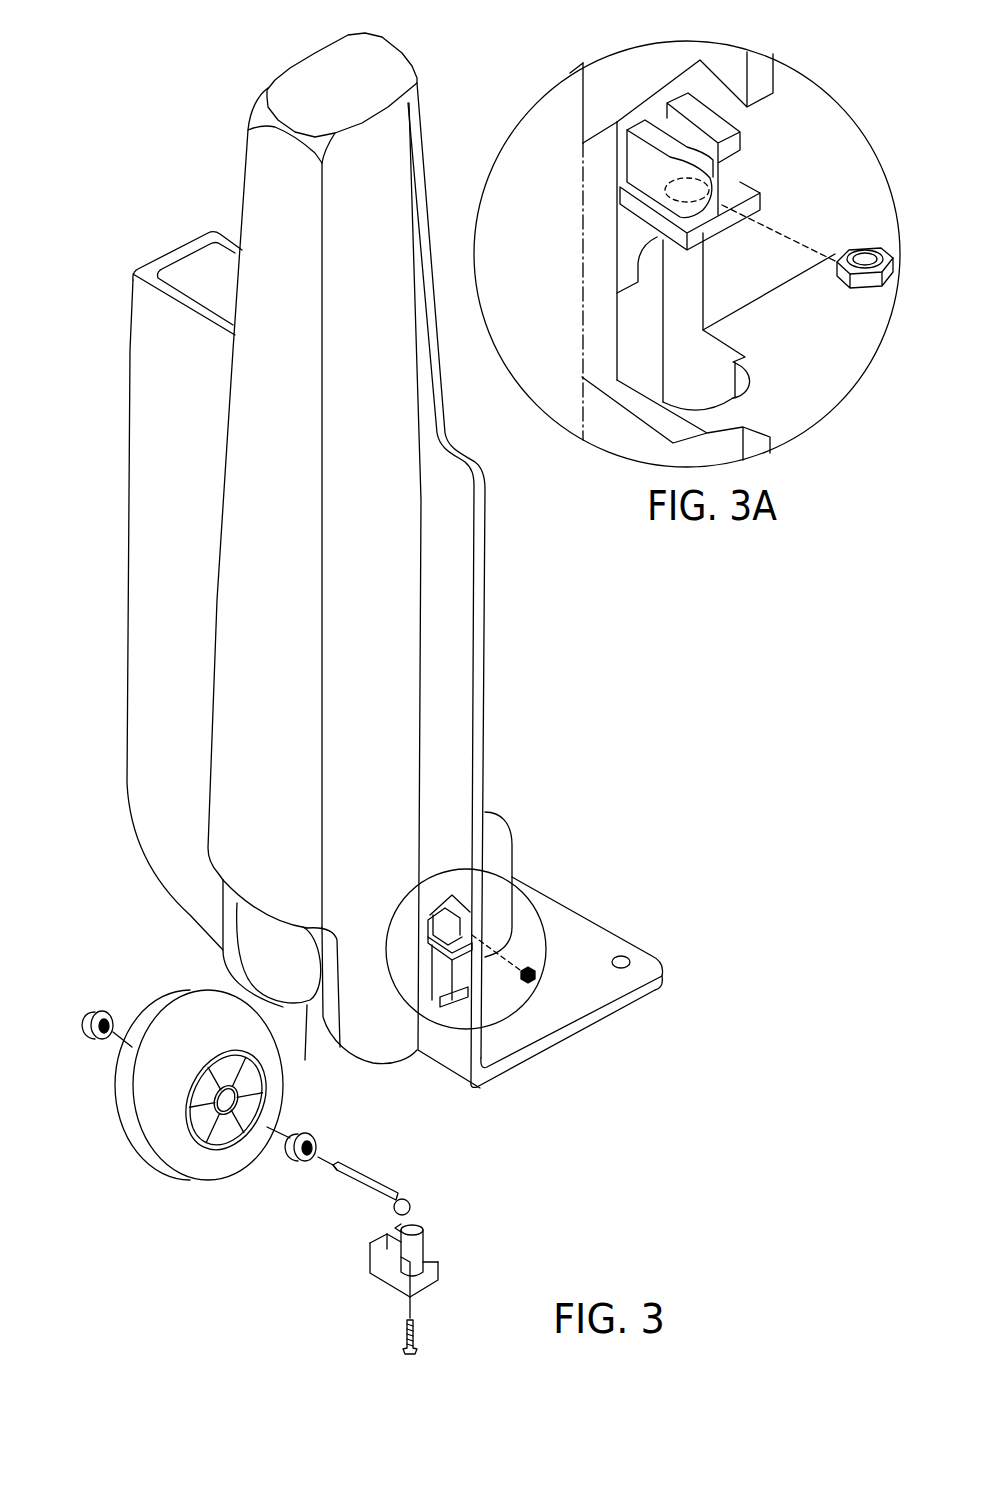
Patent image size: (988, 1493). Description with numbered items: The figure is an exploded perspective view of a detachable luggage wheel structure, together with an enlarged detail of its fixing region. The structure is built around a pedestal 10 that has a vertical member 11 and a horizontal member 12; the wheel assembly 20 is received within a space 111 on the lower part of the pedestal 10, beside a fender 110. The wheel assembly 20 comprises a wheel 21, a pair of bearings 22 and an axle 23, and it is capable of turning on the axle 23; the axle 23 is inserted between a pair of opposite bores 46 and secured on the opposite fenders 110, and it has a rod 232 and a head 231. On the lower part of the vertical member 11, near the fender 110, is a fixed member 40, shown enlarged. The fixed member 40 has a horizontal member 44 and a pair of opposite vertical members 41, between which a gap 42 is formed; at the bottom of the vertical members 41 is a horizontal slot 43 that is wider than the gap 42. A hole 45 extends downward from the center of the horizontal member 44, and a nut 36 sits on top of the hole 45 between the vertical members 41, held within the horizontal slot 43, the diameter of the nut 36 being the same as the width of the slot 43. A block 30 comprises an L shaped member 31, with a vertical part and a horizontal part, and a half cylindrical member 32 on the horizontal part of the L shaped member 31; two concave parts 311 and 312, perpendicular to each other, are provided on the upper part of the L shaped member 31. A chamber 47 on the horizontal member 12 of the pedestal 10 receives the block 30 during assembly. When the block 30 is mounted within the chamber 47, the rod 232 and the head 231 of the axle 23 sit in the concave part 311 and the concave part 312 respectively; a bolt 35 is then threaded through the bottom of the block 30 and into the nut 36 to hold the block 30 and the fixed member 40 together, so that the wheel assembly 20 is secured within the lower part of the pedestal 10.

In FIG. 3, the pedestal 10 is at (126, 418).
In FIG. 3, the vertical member 11 is at (480, 521).
In FIG. 3, the horizontal member 12 is at (588, 945).
In FIG. 3, the fender 110 is at (383, 1047).
In FIG. 3, the space 111 is at (307, 1007).
In FIG. 3, the wheel assembly 20 is at (221, 1197).
In FIG. 3, the wheel 21 is at (155, 1142).
In FIG. 3, the bearings 22 is at (84, 1040).
In FIG. 3, the axle 23 is at (337, 1172).
In FIG. 3, the head 231 is at (407, 1196).
In FIG. 3, the rod 232 is at (359, 1181).
In FIG. 3, the block 30 is at (437, 1229).
In FIG. 3, the L shaped member 31 is at (388, 1275).
In FIG. 3, the concave part 311 is at (395, 1232).
In FIG. 3, the concave part 312 is at (378, 1250).
In FIG. 3, the half cylindrical member 32 is at (414, 1257).
In FIG. 3, the bolt 35 is at (414, 1333).
In FIG. 3, the nut 36 is at (530, 967).
In FIG. 3A, the nut 36 is at (867, 284).
In FIG. 3A, the fixed member 40 is at (762, 171).
In FIG. 3A, the vertical members 41 is at (717, 120).
In FIG. 3A, the gap 42 is at (653, 120).
In FIG. 3A, the horizontal slot 43 is at (722, 205).
In FIG. 3A, the horizontal member 44 is at (703, 240).
In FIG. 3A, the hole 45 is at (680, 178).
In FIG. 3, the bores 46 is at (447, 953).
In FIG. 3A, the bores 46 is at (652, 257).
In FIG. 3, the chamber 47 is at (450, 997).
In FIG. 3A, the chamber 47 is at (707, 380).